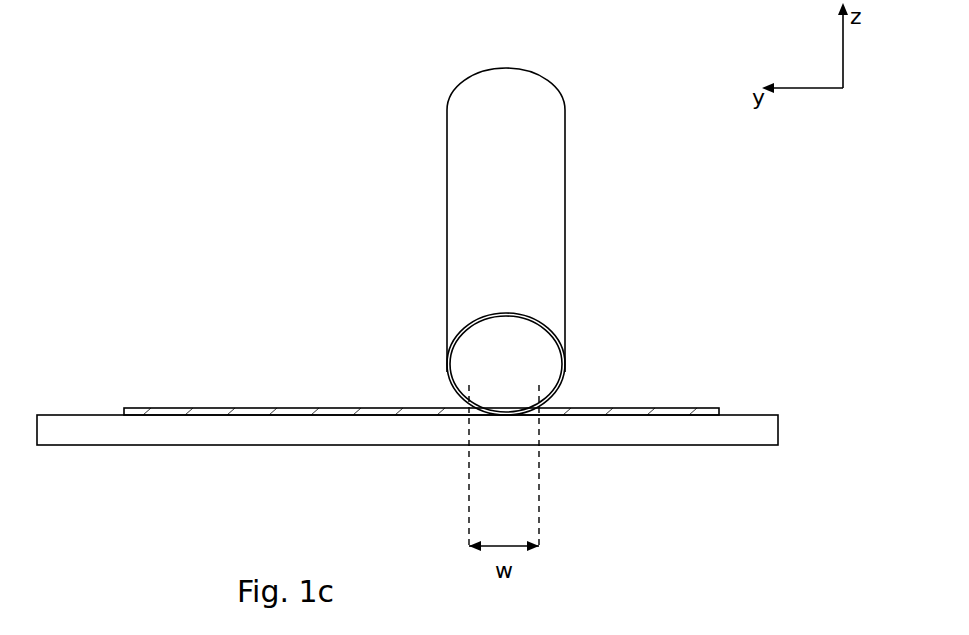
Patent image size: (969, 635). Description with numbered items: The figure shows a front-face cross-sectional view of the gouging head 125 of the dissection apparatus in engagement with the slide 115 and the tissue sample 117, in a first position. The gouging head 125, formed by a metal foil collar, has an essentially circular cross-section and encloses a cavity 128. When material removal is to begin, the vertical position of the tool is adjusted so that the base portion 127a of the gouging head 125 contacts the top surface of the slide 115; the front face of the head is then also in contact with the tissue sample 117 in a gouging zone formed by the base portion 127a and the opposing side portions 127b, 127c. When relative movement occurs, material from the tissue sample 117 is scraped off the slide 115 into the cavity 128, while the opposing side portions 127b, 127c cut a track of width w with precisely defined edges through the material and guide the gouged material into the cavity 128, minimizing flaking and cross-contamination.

The slide 115 is at (620, 422).
The tissue sample 117 is at (179, 409).
The gouging head 125 is at (477, 198).
The cavity 128 is at (492, 343).
The base portion 127a is at (504, 428).
The side portion 127b is at (532, 396).
The side portion 127c is at (478, 396).